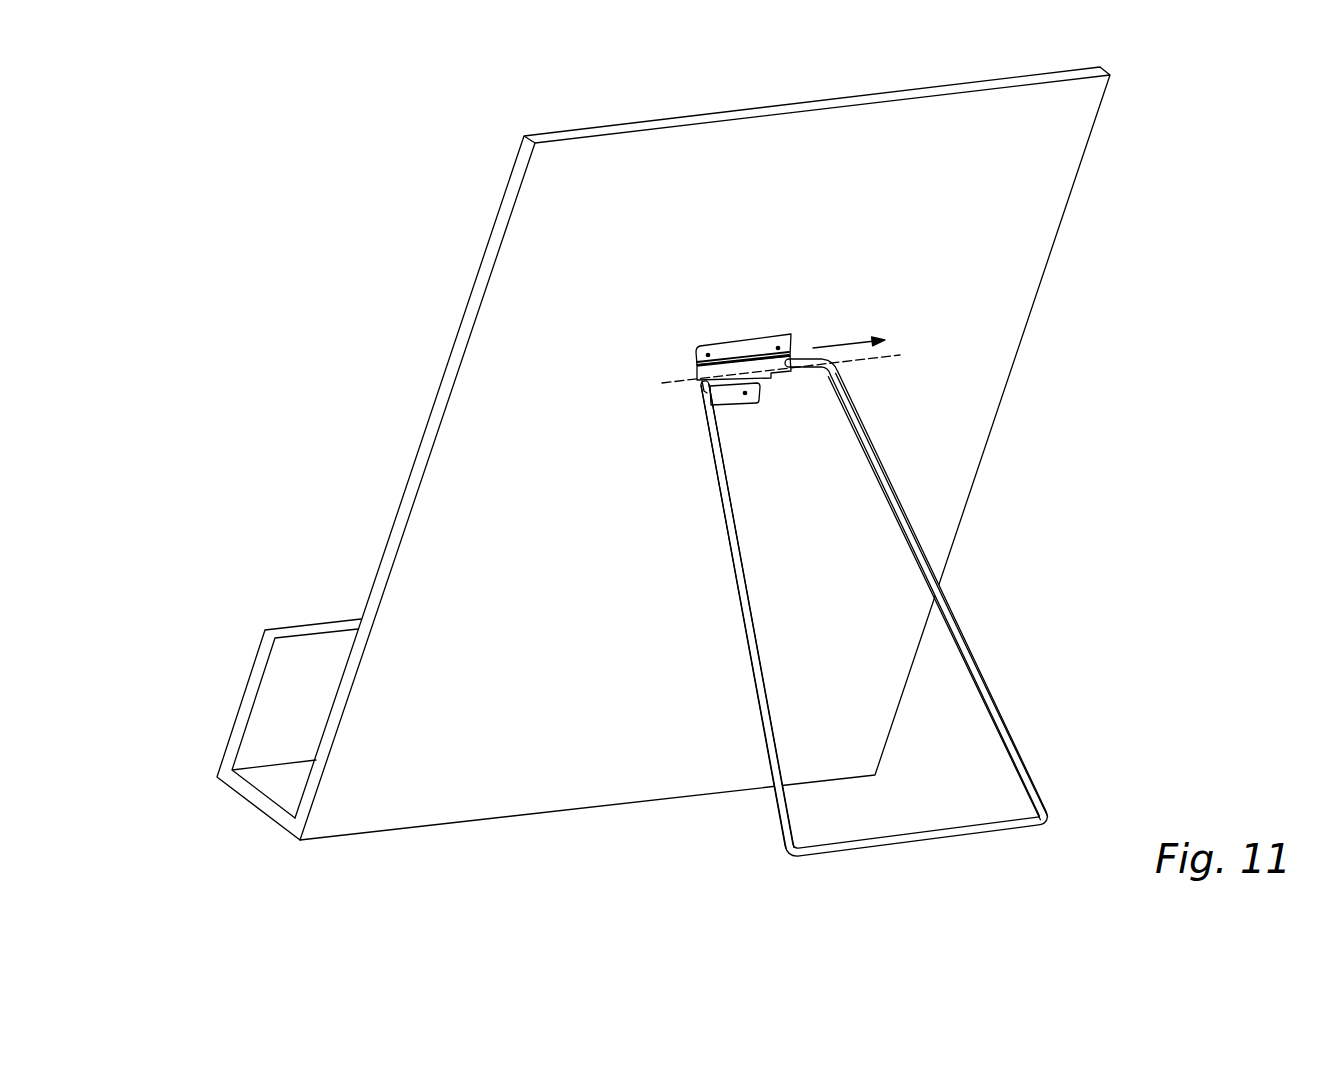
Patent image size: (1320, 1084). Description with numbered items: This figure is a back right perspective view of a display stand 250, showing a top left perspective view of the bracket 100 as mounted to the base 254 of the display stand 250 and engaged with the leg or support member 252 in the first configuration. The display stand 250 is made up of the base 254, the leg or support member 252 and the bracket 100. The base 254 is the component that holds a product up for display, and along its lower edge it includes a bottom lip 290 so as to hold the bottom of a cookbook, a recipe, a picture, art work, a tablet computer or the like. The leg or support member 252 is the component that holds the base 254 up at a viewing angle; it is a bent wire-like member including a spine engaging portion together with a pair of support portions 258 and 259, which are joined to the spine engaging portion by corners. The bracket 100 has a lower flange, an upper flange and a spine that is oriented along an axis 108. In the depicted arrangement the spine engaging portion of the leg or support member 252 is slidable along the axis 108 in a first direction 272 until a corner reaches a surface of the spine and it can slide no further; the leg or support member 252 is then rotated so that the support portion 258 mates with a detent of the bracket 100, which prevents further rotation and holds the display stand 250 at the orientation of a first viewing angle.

The display stand 250 is at (686, 453).
The base 254 is at (1043, 280).
The leg or support member 252 is at (864, 607).
The support portion 258 is at (738, 577).
The support portion 259 is at (930, 577).
The bracket 100 is at (790, 309).
The axis 108 is at (887, 357).
The first direction 272 is at (840, 333).
The bottom lip 290 is at (280, 777).